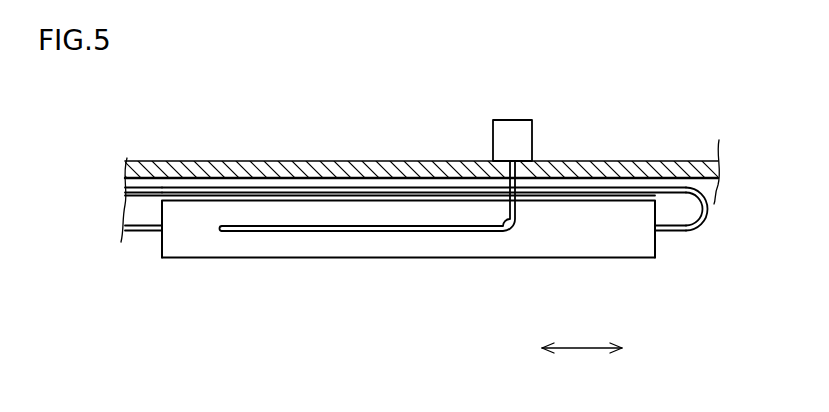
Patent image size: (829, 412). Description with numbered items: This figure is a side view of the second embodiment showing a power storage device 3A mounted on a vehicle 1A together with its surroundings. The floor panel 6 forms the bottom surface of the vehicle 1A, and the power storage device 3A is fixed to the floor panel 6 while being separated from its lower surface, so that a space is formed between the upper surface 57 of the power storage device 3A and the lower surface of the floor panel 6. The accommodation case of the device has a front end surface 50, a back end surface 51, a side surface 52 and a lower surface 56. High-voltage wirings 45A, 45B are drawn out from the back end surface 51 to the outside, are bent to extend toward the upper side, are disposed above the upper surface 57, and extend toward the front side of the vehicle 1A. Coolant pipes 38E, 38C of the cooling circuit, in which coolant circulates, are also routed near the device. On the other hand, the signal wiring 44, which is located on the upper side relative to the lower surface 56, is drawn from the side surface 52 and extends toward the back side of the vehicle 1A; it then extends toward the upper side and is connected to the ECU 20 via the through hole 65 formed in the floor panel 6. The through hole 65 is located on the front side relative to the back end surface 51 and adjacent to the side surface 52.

The vehicle 1A is at (358, 119).
The power storage device 3A is at (492, 244).
The floor panel 6 is at (405, 166).
The ECU 20 is at (511, 130).
The coolant pipe 38E is at (147, 218).
The coolant pipe 38C is at (143, 232).
The signal wiring 44 is at (402, 232).
The high-voltage wiring 45A is at (434, 218).
The high-voltage wiring 45B is at (597, 193).
The front end surface 50 is at (160, 241).
The back end surface 51 is at (657, 239).
The side surface 52 is at (576, 231).
The lower surface 56 is at (262, 259).
The upper surface 57 is at (273, 197).
The through hole 65 is at (508, 176).